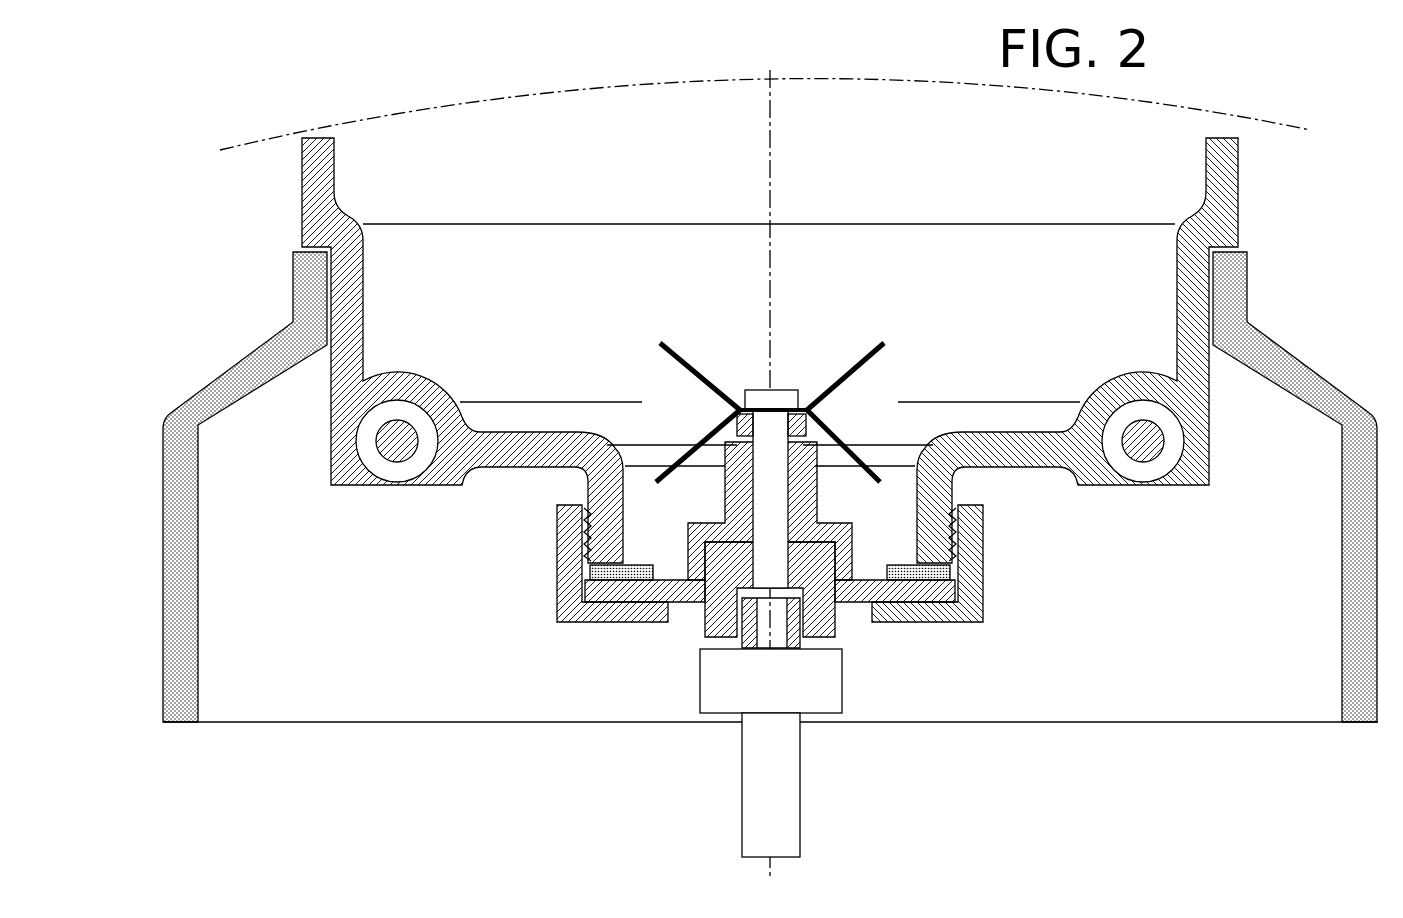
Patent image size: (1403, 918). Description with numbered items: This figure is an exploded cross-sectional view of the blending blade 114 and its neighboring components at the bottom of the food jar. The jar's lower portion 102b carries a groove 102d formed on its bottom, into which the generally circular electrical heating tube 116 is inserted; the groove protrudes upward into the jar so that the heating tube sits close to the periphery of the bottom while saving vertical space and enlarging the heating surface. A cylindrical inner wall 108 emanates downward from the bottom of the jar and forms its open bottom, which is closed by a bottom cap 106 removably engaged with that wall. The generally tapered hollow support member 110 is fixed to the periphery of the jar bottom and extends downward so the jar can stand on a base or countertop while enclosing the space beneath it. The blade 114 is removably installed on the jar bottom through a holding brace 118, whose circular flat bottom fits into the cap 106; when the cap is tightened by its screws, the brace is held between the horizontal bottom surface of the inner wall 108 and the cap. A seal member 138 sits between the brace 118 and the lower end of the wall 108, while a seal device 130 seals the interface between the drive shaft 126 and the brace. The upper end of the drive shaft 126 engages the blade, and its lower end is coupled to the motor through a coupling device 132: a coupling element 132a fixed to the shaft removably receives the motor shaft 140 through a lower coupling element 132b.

The lower portion 102b is at (1172, 325).
The groove 102d is at (407, 385).
The bottom cap 106 is at (945, 620).
The cylindrical inner wall 108 is at (960, 540).
The support member 110 is at (183, 505).
The blending blade 114 is at (880, 340).
The electrical heating tube 116 is at (393, 450).
The holding brace 118 is at (695, 595).
The drive shaft 126 is at (763, 398).
The seal device 130 is at (678, 417).
The coupling device 132 is at (890, 743).
The coupling element 132a is at (840, 640).
The lower coupling element 132b is at (745, 685).
The seal member 138 is at (575, 600).
The motor shaft 140 is at (785, 775).